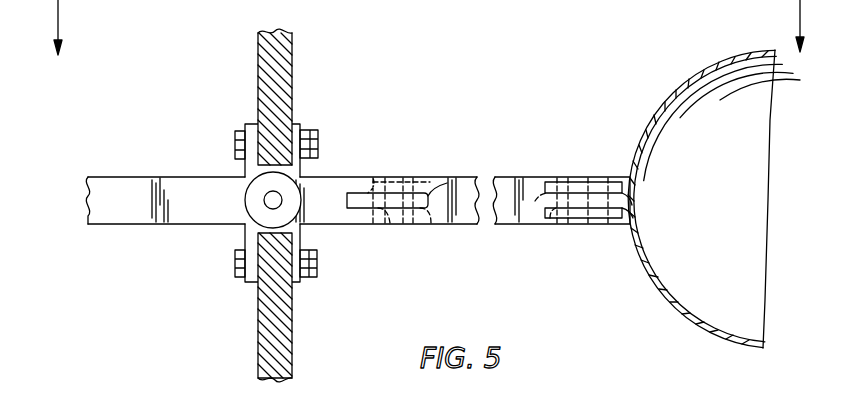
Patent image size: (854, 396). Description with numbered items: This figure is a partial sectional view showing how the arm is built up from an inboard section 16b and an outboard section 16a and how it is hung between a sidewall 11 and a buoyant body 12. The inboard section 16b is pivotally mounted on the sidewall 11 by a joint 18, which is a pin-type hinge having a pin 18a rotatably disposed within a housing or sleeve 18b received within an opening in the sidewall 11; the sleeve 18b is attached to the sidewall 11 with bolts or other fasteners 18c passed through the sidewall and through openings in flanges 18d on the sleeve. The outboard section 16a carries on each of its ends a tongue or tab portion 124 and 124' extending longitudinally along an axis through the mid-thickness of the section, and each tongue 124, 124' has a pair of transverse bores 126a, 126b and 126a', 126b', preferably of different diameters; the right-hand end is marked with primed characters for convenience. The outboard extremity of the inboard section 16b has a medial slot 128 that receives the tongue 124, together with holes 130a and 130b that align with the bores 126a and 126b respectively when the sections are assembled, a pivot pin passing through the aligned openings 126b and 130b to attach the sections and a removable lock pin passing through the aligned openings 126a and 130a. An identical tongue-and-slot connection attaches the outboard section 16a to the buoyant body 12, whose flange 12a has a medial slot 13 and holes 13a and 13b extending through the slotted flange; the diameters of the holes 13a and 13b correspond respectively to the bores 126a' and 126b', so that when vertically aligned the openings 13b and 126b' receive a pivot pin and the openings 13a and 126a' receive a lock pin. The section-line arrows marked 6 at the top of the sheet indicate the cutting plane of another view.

The section line 6- 6 is at (424, 27).
The sidewall 11 is at (258, 92).
The buoyant body 12 is at (700, 199).
The flange 12a is at (633, 177).
The medial slot 13 is at (578, 193).
The hole 13a is at (552, 220).
The hole 13b is at (602, 218).
The outboard arm section 16a is at (535, 158).
The inboard arm section 16b is at (135, 177).
The joint 18 is at (265, 203).
The pin 18a is at (248, 192).
The sleeve 18b is at (248, 206).
The fasteners 18c is at (314, 134).
The flanges 18d is at (300, 282).
The tongue 124 is at (379, 226).
The tongue 124' is at (659, 229).
The transverse bore 126a is at (451, 232).
The transverse bore 126a' is at (514, 245).
The transverse bore 126b is at (405, 247).
The transverse bore 126b' is at (665, 207).
The medial slot 128 is at (432, 194).
The hole 130a is at (424, 192).
The hole 130b is at (372, 178).